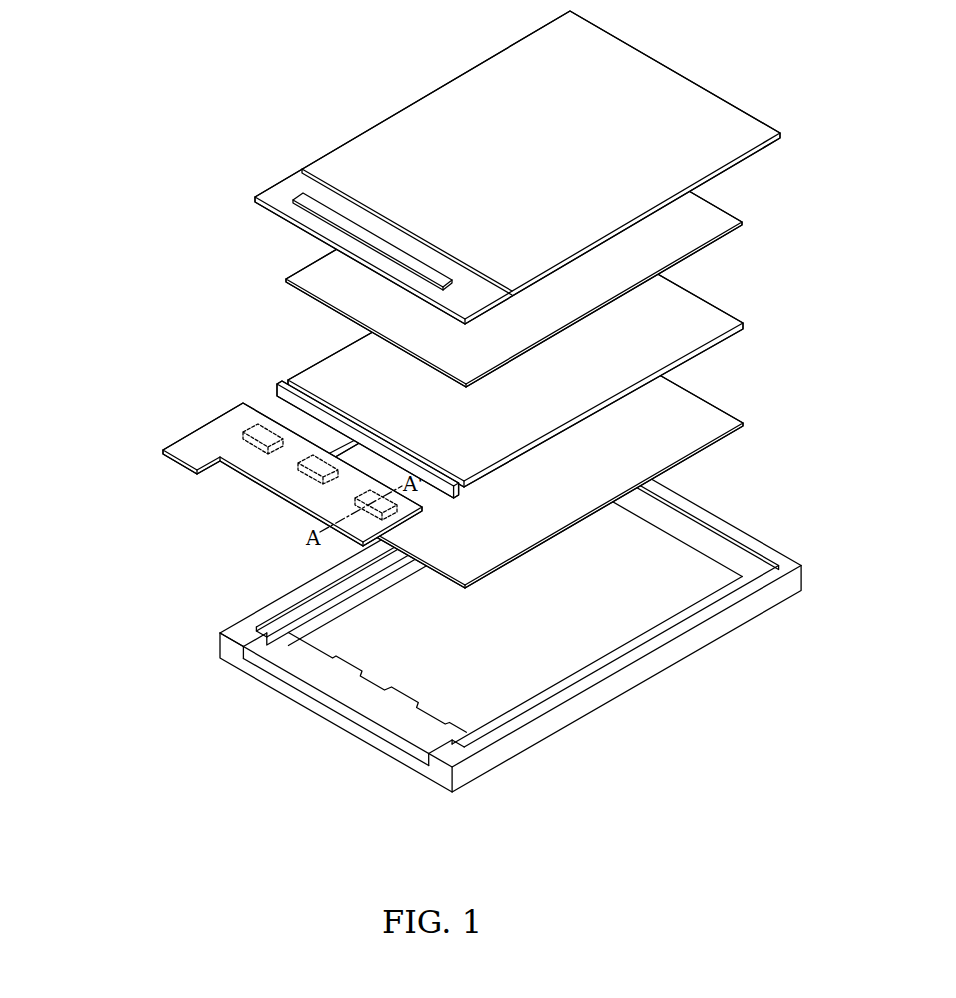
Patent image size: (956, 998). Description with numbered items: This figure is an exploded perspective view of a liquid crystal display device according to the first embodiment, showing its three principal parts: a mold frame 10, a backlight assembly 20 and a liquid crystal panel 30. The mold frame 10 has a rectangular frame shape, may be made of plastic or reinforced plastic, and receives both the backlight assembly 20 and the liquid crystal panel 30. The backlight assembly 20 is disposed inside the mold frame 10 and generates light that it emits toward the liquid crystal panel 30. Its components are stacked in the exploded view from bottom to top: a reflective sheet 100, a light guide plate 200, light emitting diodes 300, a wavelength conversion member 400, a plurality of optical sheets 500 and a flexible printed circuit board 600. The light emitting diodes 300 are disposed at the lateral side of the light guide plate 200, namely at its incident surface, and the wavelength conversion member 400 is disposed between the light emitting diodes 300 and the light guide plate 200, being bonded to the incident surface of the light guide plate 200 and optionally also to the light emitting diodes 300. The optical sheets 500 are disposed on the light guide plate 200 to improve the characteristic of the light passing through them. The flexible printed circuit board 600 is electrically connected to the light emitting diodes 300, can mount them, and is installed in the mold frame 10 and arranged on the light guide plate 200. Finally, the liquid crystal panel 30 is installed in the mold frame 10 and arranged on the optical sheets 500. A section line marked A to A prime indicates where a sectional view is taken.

The mold frame 10 is at (233, 611).
The backlight assembly 20 is at (100, 335).
The liquid crystal panel 30 is at (338, 159).
The reflective sheet 100 is at (452, 558).
The light guide plate 200 is at (280, 394).
The light emitting diodes 300 is at (257, 440).
The wavelength conversion member 400 is at (320, 382).
The optical sheets 500 is at (355, 298).
The flexible printed circuit board 600 is at (233, 416).